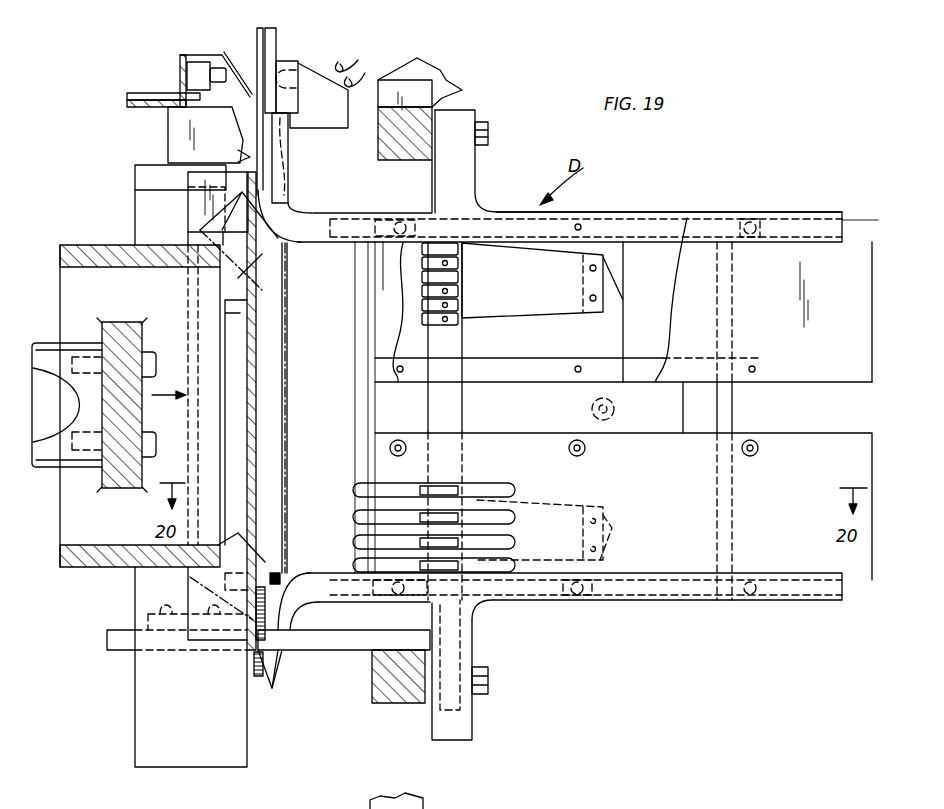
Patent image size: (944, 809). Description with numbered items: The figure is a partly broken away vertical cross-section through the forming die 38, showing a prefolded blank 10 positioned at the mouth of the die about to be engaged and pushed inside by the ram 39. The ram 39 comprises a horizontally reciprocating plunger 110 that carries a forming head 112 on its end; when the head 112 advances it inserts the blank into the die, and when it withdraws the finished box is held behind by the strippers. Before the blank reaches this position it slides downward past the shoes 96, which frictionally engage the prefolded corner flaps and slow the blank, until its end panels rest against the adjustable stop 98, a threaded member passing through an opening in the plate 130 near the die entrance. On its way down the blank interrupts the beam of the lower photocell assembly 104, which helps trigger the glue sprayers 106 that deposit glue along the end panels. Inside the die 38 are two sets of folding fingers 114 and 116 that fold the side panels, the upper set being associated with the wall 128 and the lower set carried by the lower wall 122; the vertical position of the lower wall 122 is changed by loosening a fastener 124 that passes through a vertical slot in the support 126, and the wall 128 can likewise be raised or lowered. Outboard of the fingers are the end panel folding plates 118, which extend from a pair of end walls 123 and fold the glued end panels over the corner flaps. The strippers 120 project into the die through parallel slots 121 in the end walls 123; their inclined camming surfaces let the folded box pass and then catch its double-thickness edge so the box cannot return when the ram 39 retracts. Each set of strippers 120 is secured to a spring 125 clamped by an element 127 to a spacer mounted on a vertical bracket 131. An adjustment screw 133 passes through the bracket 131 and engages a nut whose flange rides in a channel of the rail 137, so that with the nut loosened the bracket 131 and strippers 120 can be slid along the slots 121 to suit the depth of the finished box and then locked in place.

The blank 10 is at (253, 450).
The forming die 38 is at (650, 168).
The ram 39 is at (49, 288).
The shoes 96 is at (147, 682).
The adjustable stop 98 is at (267, 580).
The second photocell assembly 104 is at (200, 68).
The glue sprayers 106 is at (173, 140).
The plunger 110 is at (47, 358).
The forming head 112 is at (102, 253).
The folding fingers 114 is at (280, 210).
The folding fingers 116 is at (287, 600).
The end panel folding plates 118 is at (343, 250).
The strippers 120 is at (458, 322).
The slots 121 is at (497, 568).
The lower wall 122 is at (690, 603).
The end walls 123 is at (818, 447).
The fastener 124 is at (490, 677).
The spring 125 is at (552, 302).
The support 126 is at (463, 731).
The element 127 is at (595, 283).
The wall 128 is at (492, 217).
The plate 130 is at (343, 643).
The vertical bracket 131 is at (608, 322).
The adjustment screw 133 is at (590, 399).
The rail 137 is at (642, 367).